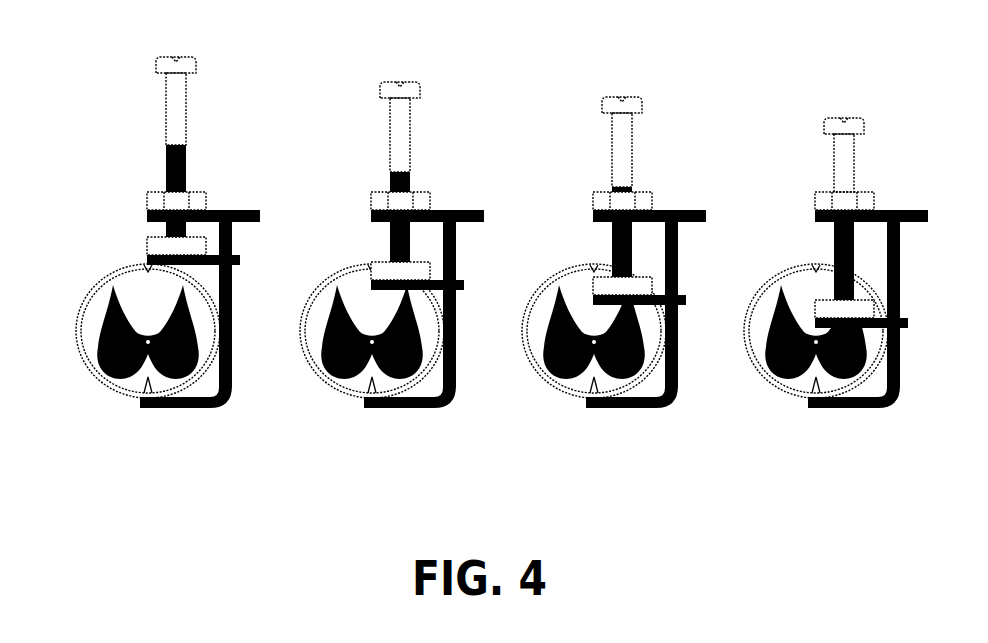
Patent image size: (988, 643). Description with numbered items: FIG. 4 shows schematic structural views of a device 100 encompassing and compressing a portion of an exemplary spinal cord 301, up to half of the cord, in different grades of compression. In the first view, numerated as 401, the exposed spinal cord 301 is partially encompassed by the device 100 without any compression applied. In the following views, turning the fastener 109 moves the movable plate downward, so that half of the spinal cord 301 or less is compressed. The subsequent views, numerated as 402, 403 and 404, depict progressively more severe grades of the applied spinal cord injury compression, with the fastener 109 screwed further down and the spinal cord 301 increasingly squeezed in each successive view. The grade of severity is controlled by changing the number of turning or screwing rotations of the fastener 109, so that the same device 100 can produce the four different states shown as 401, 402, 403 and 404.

The spinal cord compression device 100 is at (177, 205).
The fastener 109 is at (151, 76).
The spinal cord 301 is at (108, 268).
The partially encompassing step 401 is at (177, 257).
The first grade of compression 402 is at (385, 439).
The second grade of compression 403 is at (612, 438).
The third grade of compression 404 is at (832, 430).